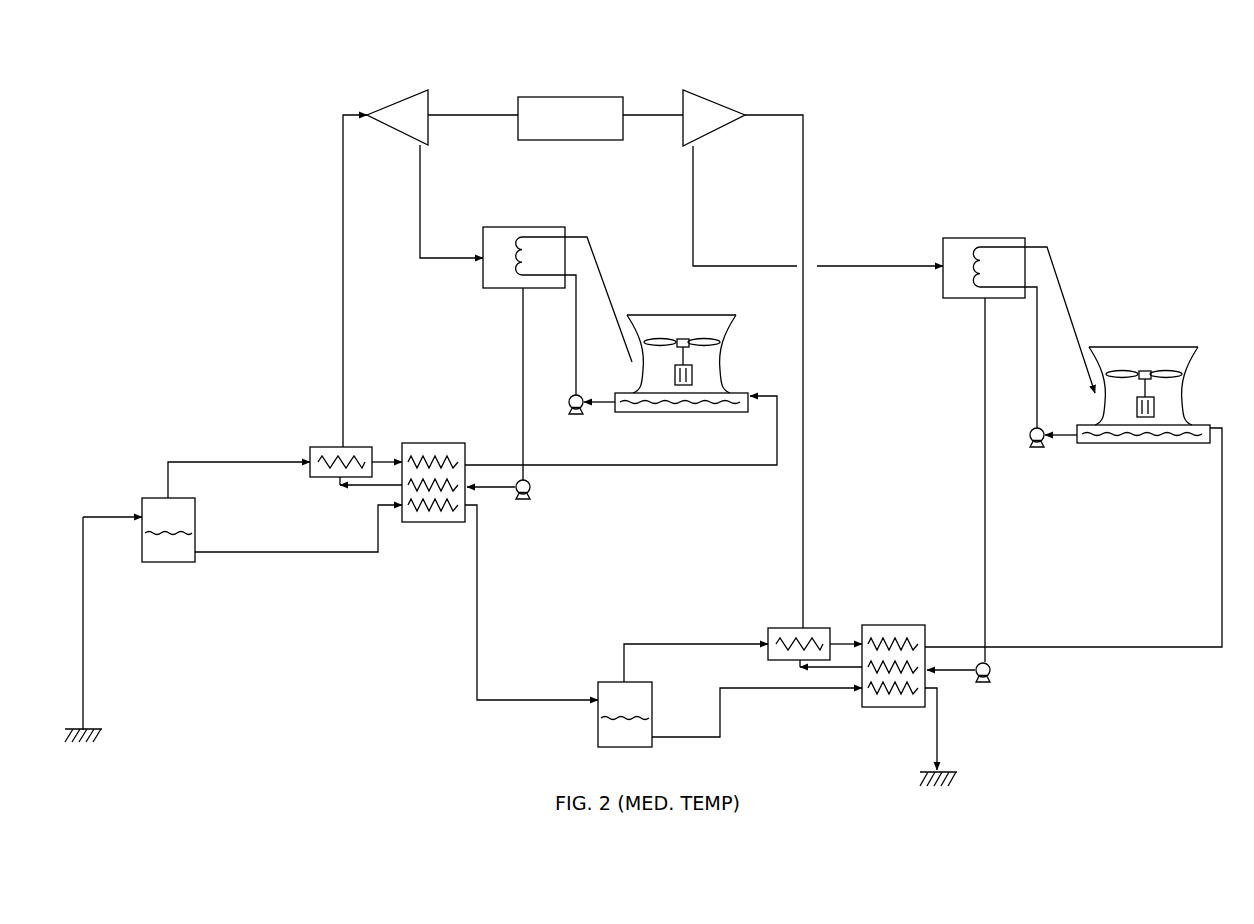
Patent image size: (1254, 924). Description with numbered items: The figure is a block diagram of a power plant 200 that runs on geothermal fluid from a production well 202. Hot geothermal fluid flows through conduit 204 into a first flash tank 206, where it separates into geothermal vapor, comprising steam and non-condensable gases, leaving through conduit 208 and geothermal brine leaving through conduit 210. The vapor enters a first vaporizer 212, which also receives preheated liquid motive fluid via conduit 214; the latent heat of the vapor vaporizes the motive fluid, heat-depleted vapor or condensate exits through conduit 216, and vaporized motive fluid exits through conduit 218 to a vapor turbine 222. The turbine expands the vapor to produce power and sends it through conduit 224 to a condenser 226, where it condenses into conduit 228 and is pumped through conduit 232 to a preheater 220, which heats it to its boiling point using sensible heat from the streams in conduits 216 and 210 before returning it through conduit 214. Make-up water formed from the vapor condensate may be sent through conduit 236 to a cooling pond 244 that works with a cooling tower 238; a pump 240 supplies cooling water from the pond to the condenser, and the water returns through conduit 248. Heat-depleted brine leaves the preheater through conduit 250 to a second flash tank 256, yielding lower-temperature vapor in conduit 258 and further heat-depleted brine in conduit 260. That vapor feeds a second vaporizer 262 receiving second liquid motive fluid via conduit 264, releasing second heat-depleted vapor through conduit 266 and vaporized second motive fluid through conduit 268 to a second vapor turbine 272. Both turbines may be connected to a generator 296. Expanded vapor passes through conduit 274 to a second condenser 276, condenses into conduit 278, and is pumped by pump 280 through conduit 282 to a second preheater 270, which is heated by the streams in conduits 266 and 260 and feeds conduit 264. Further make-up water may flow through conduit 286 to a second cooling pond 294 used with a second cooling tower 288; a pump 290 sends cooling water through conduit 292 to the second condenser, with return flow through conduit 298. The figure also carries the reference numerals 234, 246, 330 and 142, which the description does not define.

The power plant 200 is at (158, 103).
The production well 202 is at (91, 736).
The conduit 204 is at (84, 534).
The first flash tank 206 is at (188, 563).
The conduit 208 is at (168, 484).
The conduit 210 is at (298, 554).
The first vaporizer 212 is at (326, 478).
The conduit 214 is at (371, 486).
The conduit 216 is at (378, 461).
The conduit 218 is at (344, 340).
The preheater 220 is at (437, 523).
The vapor turbine 222 is at (380, 103).
The conduit 224 is at (422, 256).
The condenser 226 is at (567, 230).
The conduit 228 is at (521, 355).
The conduit 232 is at (493, 489).
The spent brine line 234 is at (938, 745).
The conduit 236 is at (625, 468).
The cooling tower 238 is at (730, 346).
The pump 240 is at (567, 398).
The cooling pond 244 is at (670, 413).
The injection well 246 is at (944, 773).
The conduit 248 is at (605, 291).
The conduit 250 is at (548, 702).
The second flash tank 256 is at (650, 748).
The conduit 258 is at (622, 664).
The conduit 260 is at (756, 691).
The second vaporizer 262 is at (772, 661).
The conduit 264 is at (831, 664).
The conduit 266 is at (838, 645).
The conduit 268 is at (805, 343).
The second preheater 270 is at (897, 708).
The second vapor turbine 272 is at (730, 103).
The conduit 274 is at (724, 266).
The second condenser 276 is at (1026, 241).
The conduit 278 is at (987, 351).
The pump 280 is at (991, 671).
The conduit 282 is at (953, 673).
The conduit 286 is at (1140, 648).
The second cooling tower 288 is at (1187, 378).
The pump 290 is at (1028, 432).
The conduit 292 is at (1038, 378).
The second cooling pond 294 is at (1134, 444).
The generator 296 is at (575, 97).
The conduit 298 is at (1067, 301).
The working fluid pump 330 is at (530, 486).
The cooling water supply line 142 is at (578, 342).